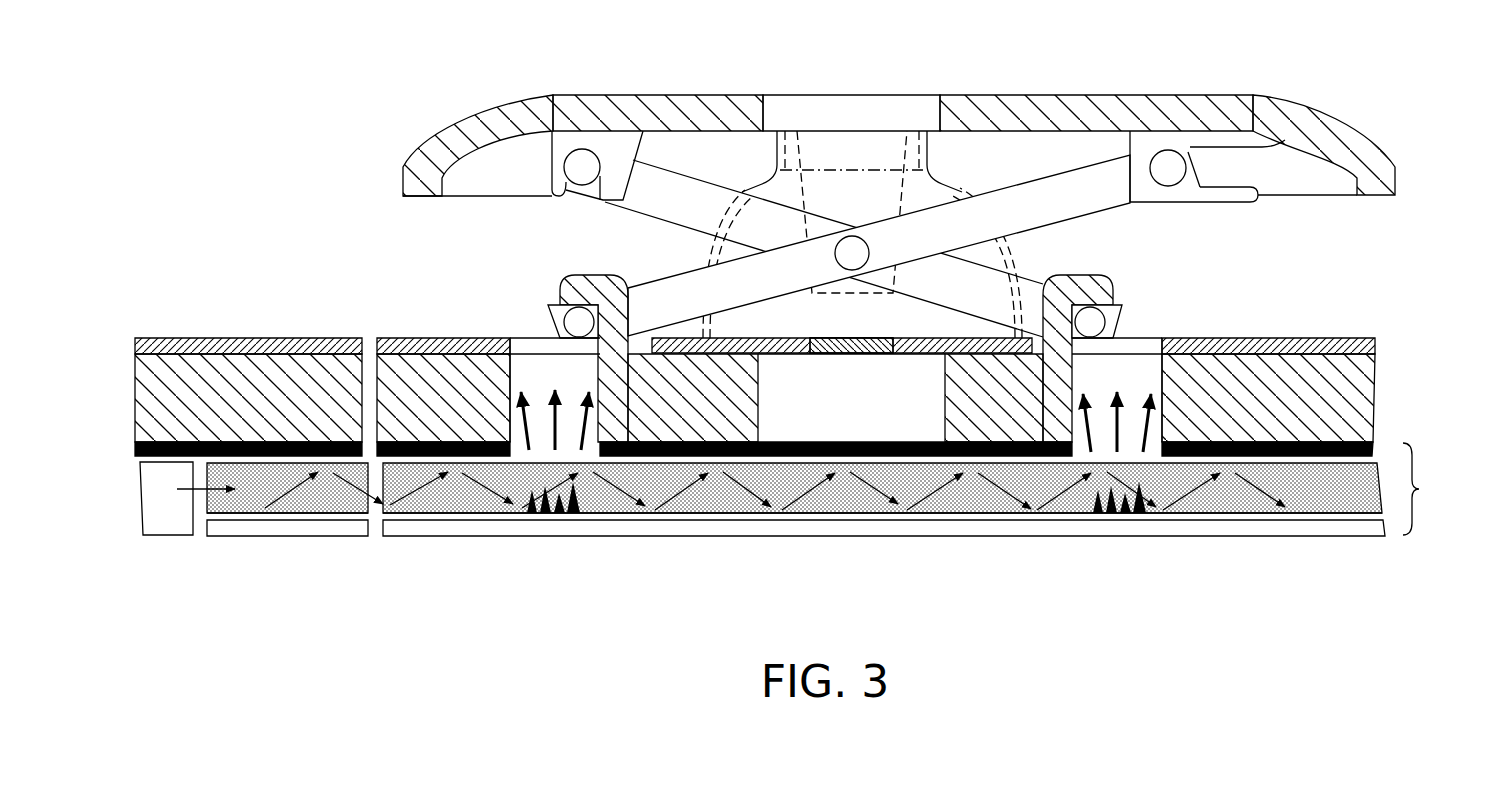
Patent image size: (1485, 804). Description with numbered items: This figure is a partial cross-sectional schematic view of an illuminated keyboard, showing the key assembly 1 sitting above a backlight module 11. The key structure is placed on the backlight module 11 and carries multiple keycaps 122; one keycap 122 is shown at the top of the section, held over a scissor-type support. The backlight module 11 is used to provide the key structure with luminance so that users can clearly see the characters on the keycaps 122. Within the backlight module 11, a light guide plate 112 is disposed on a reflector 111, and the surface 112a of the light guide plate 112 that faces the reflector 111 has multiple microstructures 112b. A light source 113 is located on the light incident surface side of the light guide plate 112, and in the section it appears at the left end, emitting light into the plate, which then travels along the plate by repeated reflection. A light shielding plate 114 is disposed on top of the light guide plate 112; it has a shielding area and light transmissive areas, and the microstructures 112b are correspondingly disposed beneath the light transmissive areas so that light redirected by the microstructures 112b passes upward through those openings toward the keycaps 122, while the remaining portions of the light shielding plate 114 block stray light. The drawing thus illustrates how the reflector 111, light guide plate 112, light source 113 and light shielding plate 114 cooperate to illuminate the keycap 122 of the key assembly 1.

The keyboard device / key structure 1 is at (1328, 82).
The backlight module 11 is at (1427, 489).
The reflector 111 is at (416, 529).
The light guide plate 112 is at (240, 500).
The surface 112a is at (302, 520).
The microstructures 112b is at (583, 501).
The light source 113 is at (167, 539).
The light shielding plate 114 is at (133, 448).
The keycap 122 is at (1167, 113).